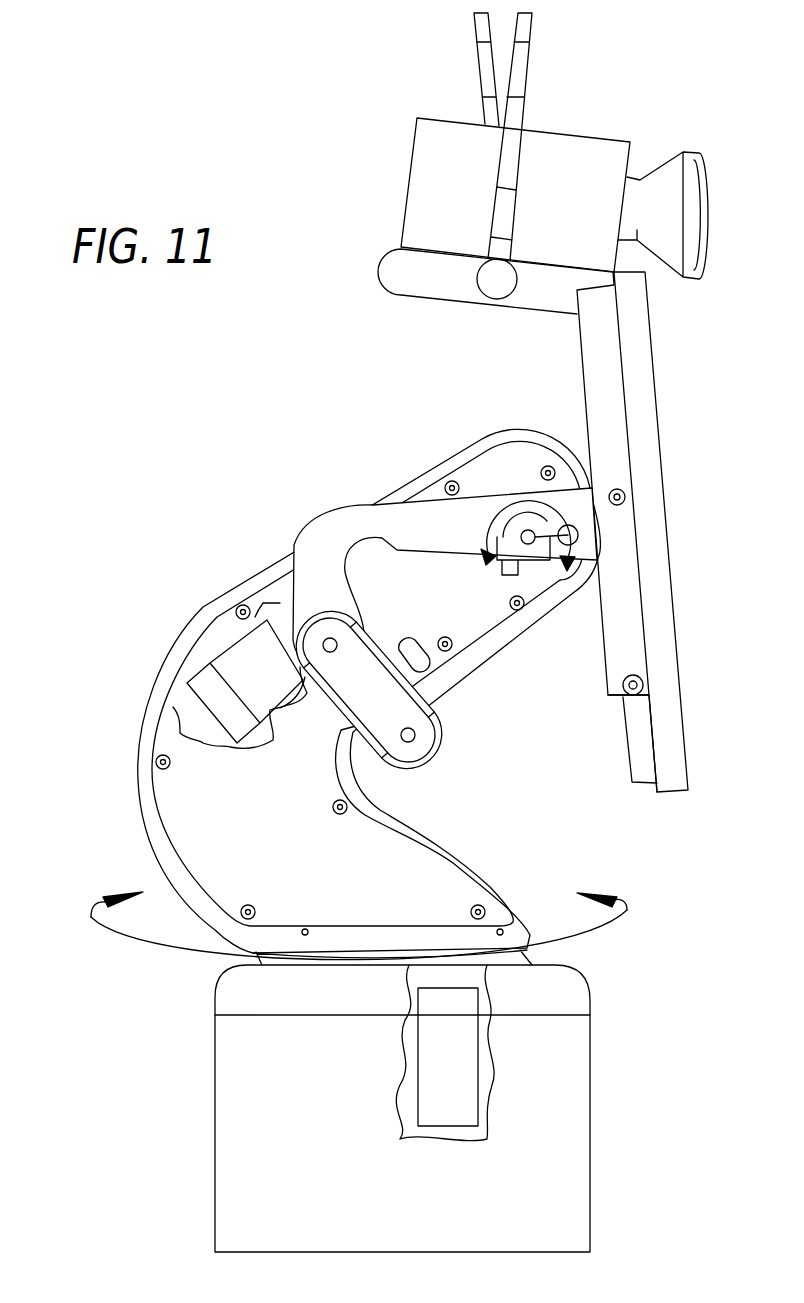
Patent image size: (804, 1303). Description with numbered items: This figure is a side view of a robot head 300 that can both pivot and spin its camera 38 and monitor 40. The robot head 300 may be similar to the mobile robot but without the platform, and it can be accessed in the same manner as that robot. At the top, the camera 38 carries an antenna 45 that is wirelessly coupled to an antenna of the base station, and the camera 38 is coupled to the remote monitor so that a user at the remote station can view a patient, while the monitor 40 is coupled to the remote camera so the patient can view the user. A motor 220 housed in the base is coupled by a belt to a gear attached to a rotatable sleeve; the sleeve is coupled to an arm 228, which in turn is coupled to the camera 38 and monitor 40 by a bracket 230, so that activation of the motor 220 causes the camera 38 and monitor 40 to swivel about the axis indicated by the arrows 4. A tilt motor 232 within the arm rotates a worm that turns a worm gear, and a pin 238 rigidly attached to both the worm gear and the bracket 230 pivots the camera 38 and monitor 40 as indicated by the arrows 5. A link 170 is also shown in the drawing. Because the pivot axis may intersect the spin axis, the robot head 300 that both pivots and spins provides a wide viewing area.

The robot head 300 is at (183, 493).
The camera 38 is at (588, 163).
The antenna 45 is at (520, 82).
The monitor 40 is at (673, 635).
The arm 228 is at (207, 833).
The tilt motor 232 is at (251, 653).
The bracket 230 is at (370, 500).
The link 170 is at (418, 745).
The pin 238 is at (523, 535).
The spin axis 5 is at (518, 536).
The motor 220 is at (462, 1054).
The pivot axis 4 is at (364, 926).